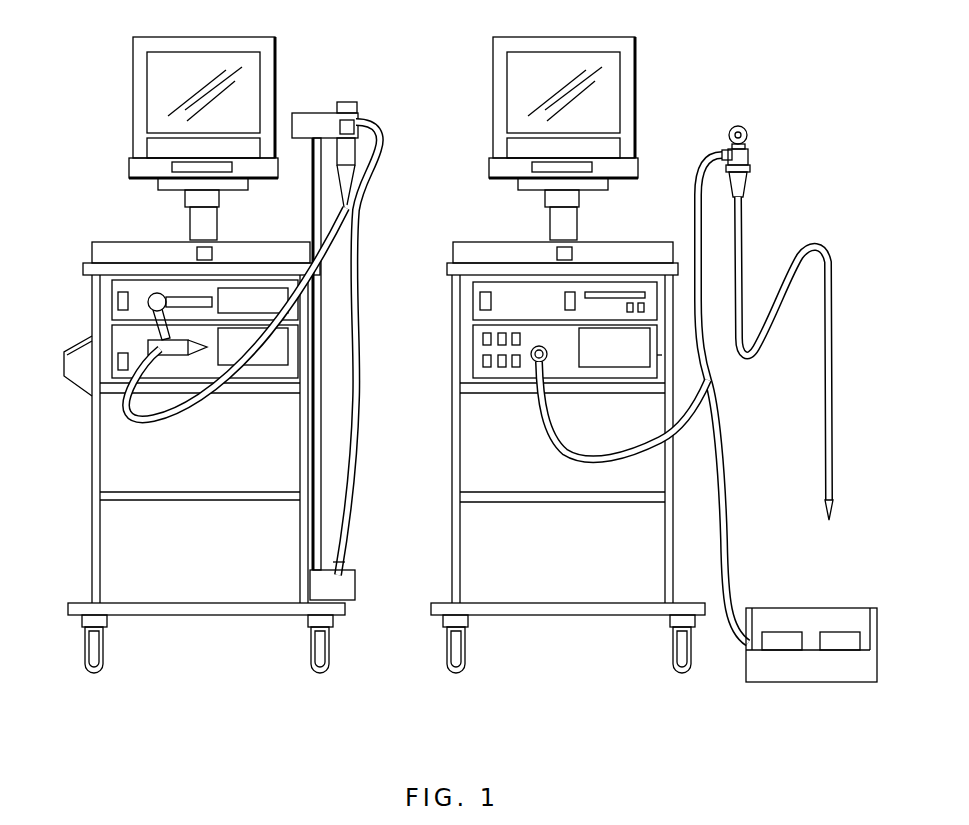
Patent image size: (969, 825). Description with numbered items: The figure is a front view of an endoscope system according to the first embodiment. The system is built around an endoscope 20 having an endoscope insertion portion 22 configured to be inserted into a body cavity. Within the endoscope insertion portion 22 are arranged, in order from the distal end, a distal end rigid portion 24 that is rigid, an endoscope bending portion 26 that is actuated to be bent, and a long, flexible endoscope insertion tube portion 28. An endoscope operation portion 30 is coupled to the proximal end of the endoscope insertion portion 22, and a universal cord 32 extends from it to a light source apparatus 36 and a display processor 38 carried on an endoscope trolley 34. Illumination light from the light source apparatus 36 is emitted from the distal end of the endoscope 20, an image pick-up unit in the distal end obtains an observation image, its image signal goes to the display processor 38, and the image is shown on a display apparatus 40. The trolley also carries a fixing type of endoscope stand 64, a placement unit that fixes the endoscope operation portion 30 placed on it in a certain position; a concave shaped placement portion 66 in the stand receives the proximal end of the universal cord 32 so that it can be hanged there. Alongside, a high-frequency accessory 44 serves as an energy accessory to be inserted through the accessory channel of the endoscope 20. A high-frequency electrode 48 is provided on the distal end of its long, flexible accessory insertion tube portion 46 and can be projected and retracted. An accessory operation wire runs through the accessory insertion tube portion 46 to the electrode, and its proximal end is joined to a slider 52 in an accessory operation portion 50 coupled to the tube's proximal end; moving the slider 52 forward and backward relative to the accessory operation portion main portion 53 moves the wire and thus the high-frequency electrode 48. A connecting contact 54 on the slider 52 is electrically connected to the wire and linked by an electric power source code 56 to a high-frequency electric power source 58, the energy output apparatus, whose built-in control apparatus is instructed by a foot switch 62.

The endoscope 20 is at (282, 337).
The endoscope insertion portion 22 is at (360, 328).
The distal end rigid portion 24 is at (352, 586).
The endoscope bending portion 26 is at (350, 562).
The endoscope insertion tube portion 28 is at (360, 409).
The endoscope operation portion 30 is at (347, 101).
The universal cord 32 is at (362, 118).
The endoscope trolley 34 is at (95, 454).
The light source apparatus 36 is at (131, 345).
The display processor 38 is at (112, 298).
The display apparatus 40 is at (165, 89).
The high-frequency accessory 44 is at (760, 288).
The accessory insertion tube portion 46 is at (808, 247).
The high-frequency electrode 48 is at (830, 508).
The accessory operation portion 50 is at (731, 127).
The slider 52 is at (737, 125).
The accessory operation portion main portion 53 is at (750, 177).
The connecting contact 54 is at (722, 153).
The electric power source code 56 is at (718, 370).
The high-frequency electric power source 58 is at (485, 347).
The foot switch 62 is at (800, 603).
The fixing type of endoscope stand 64 is at (313, 98).
The concave shaped placement portion 66 is at (342, 131).